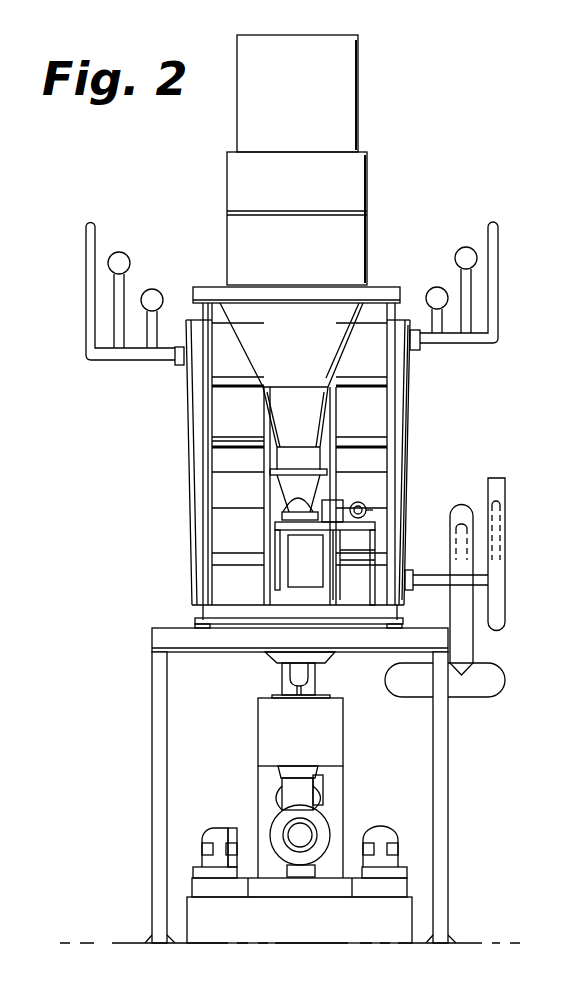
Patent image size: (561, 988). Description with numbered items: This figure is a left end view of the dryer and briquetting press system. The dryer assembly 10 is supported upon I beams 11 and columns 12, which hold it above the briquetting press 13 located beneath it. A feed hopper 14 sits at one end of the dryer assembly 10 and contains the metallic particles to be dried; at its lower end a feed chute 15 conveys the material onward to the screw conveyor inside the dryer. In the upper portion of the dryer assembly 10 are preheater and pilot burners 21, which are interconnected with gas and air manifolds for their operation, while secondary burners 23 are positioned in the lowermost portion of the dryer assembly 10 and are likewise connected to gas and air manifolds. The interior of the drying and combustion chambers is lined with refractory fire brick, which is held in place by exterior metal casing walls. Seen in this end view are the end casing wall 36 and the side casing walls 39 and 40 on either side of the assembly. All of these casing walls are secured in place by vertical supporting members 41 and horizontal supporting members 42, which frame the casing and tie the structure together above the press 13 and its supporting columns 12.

The dryer assembly 10 is at (385, 420).
The I beams 11 is at (200, 617).
The columns 12 is at (160, 835).
The briquetting press 13 is at (288, 732).
The feed hopper 14 is at (345, 192).
The feed chute 15 is at (298, 462).
The preheater and pilot burners 21 is at (418, 350).
The secondary burners 23 is at (413, 575).
The end casing wall 36 is at (228, 422).
The side casing wall 39 is at (190, 385).
The side casing wall 40 is at (410, 392).
The vertical supporting members 41 is at (183, 326).
The horizontal supporting members 42 is at (224, 440).